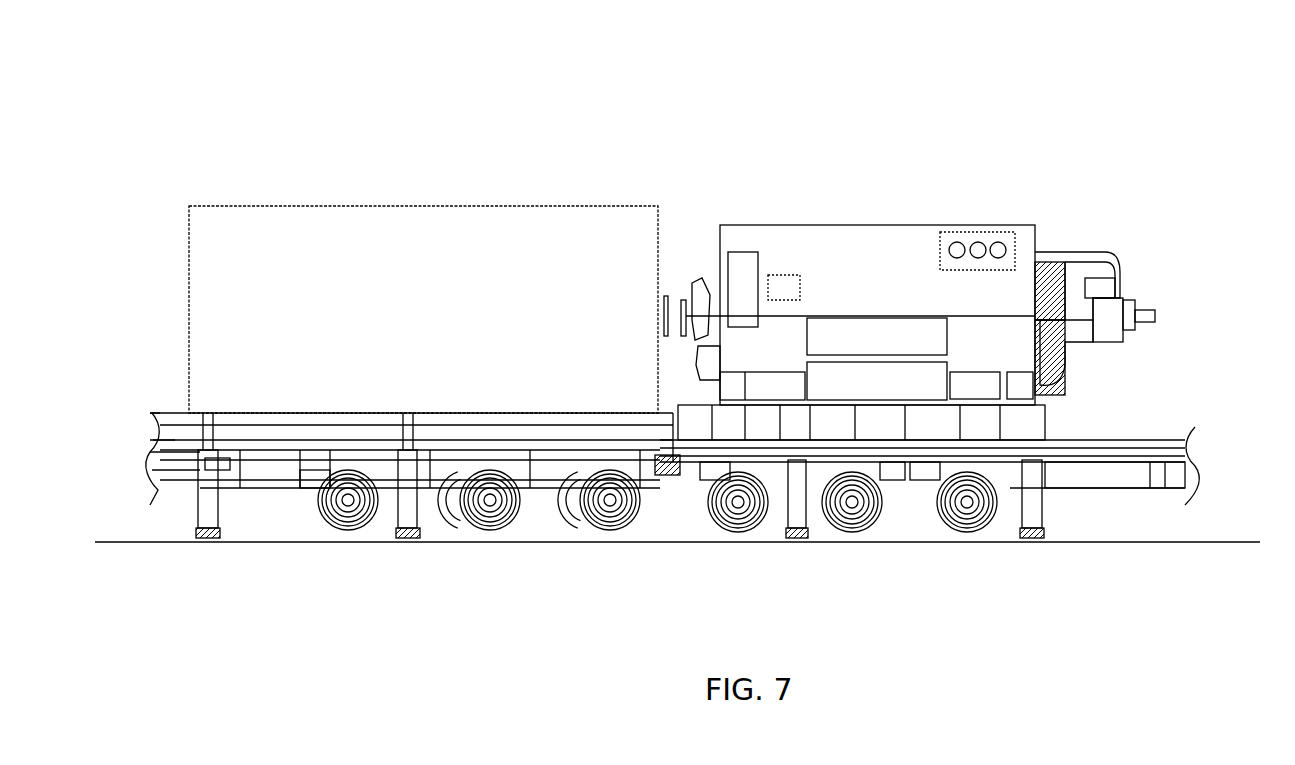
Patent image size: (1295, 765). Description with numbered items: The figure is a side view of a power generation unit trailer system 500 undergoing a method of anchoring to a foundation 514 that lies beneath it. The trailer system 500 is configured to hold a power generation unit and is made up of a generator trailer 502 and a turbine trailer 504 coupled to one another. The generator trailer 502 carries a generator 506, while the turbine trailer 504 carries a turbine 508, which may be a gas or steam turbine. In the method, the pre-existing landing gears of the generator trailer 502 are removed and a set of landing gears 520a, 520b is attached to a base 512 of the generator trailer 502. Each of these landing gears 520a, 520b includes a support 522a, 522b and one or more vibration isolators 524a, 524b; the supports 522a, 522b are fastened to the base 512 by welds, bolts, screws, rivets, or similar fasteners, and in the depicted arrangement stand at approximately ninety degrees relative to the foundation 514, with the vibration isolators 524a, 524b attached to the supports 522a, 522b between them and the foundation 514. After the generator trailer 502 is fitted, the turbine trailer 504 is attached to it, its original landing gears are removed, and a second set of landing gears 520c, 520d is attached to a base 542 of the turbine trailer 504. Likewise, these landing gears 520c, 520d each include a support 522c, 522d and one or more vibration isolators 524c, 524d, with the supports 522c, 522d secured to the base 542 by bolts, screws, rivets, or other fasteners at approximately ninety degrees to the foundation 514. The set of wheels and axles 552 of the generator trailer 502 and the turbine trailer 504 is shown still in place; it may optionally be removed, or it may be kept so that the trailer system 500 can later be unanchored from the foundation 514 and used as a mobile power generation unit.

The trailer system 500 is at (1003, 97).
The generator trailer 502 is at (960, 200).
The turbine trailer 504 is at (358, 177).
The generator 506 is at (1015, 282).
The turbine 508 is at (509, 224).
The base 512 is at (1203, 428).
The foundation 514 is at (640, 594).
The landing gear 520a is at (1030, 567).
The landing gear 520b is at (798, 565).
The landing gear 520c is at (403, 568).
The landing gear 520d is at (200, 568).
The support 522a is at (1033, 507).
The support 522b is at (797, 507).
The support 522c is at (406, 508).
The support 522d is at (208, 508).
The vibration isolator 524a is at (1026, 536).
The vibration isolator 524b is at (790, 536).
The vibration isolator 524c is at (400, 536).
The vibration isolator 524d is at (200, 536).
The base 542 is at (133, 417).
The set of wheels and axles 552 is at (590, 492).